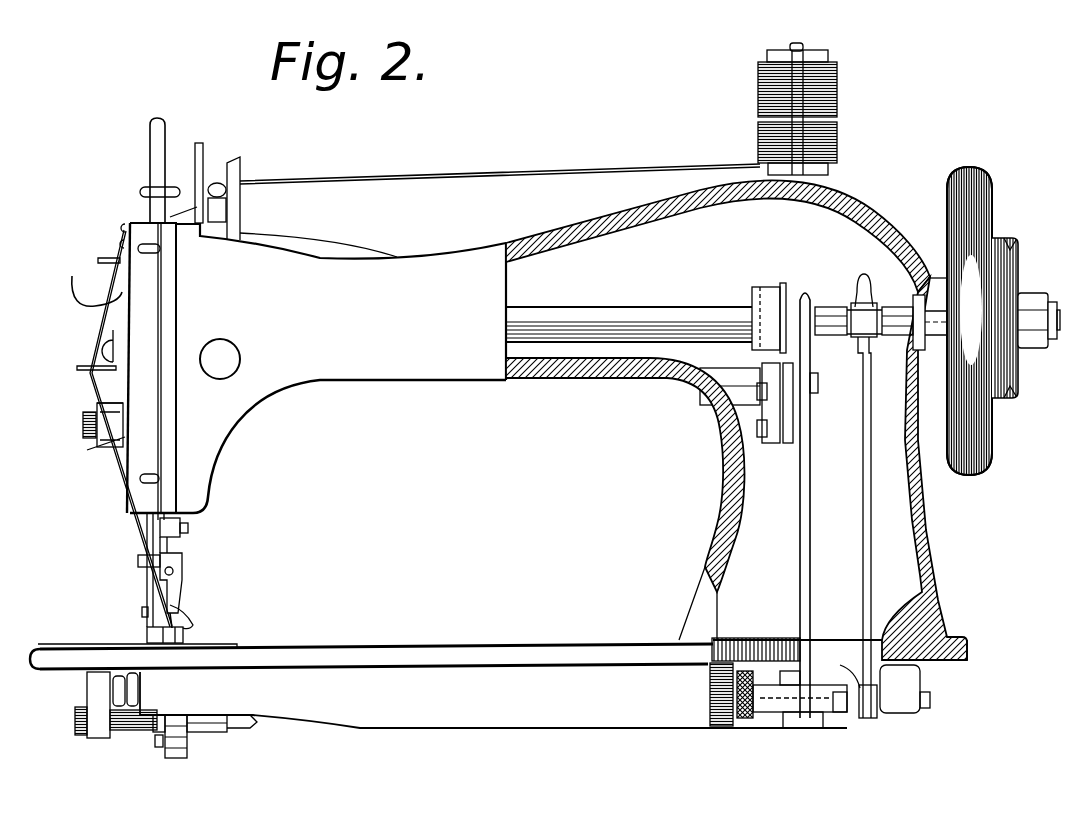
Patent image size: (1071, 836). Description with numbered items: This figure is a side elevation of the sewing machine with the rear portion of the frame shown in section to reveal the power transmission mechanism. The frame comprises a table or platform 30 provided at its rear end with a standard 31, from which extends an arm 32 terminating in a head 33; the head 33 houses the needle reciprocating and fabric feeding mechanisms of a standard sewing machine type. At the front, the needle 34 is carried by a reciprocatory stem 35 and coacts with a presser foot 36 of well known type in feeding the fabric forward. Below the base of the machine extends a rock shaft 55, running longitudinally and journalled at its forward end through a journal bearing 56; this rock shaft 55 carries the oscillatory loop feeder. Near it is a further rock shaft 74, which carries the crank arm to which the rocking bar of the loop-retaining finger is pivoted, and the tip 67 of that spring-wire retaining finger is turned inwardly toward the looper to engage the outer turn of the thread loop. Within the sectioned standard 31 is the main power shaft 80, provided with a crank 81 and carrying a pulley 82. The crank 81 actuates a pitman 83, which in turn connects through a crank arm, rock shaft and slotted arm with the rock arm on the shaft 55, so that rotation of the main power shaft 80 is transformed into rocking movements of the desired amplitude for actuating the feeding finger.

The table or platform 30 is at (460, 646).
The standard 31 is at (715, 535).
The arm 32 is at (530, 346).
The head 33 is at (156, 372).
The needle 34 is at (182, 563).
The reciprocatory stem 35 is at (185, 534).
The presser foot 36 is at (150, 610).
The rock shaft 55 is at (262, 722).
The journal bearing 56 is at (227, 733).
The tip 67 is at (180, 758).
The rock shaft 74 is at (125, 733).
The main power shaft 80 is at (703, 313).
The crank 81 is at (897, 307).
The pulley 82 is at (977, 202).
The pitman 83 is at (863, 540).